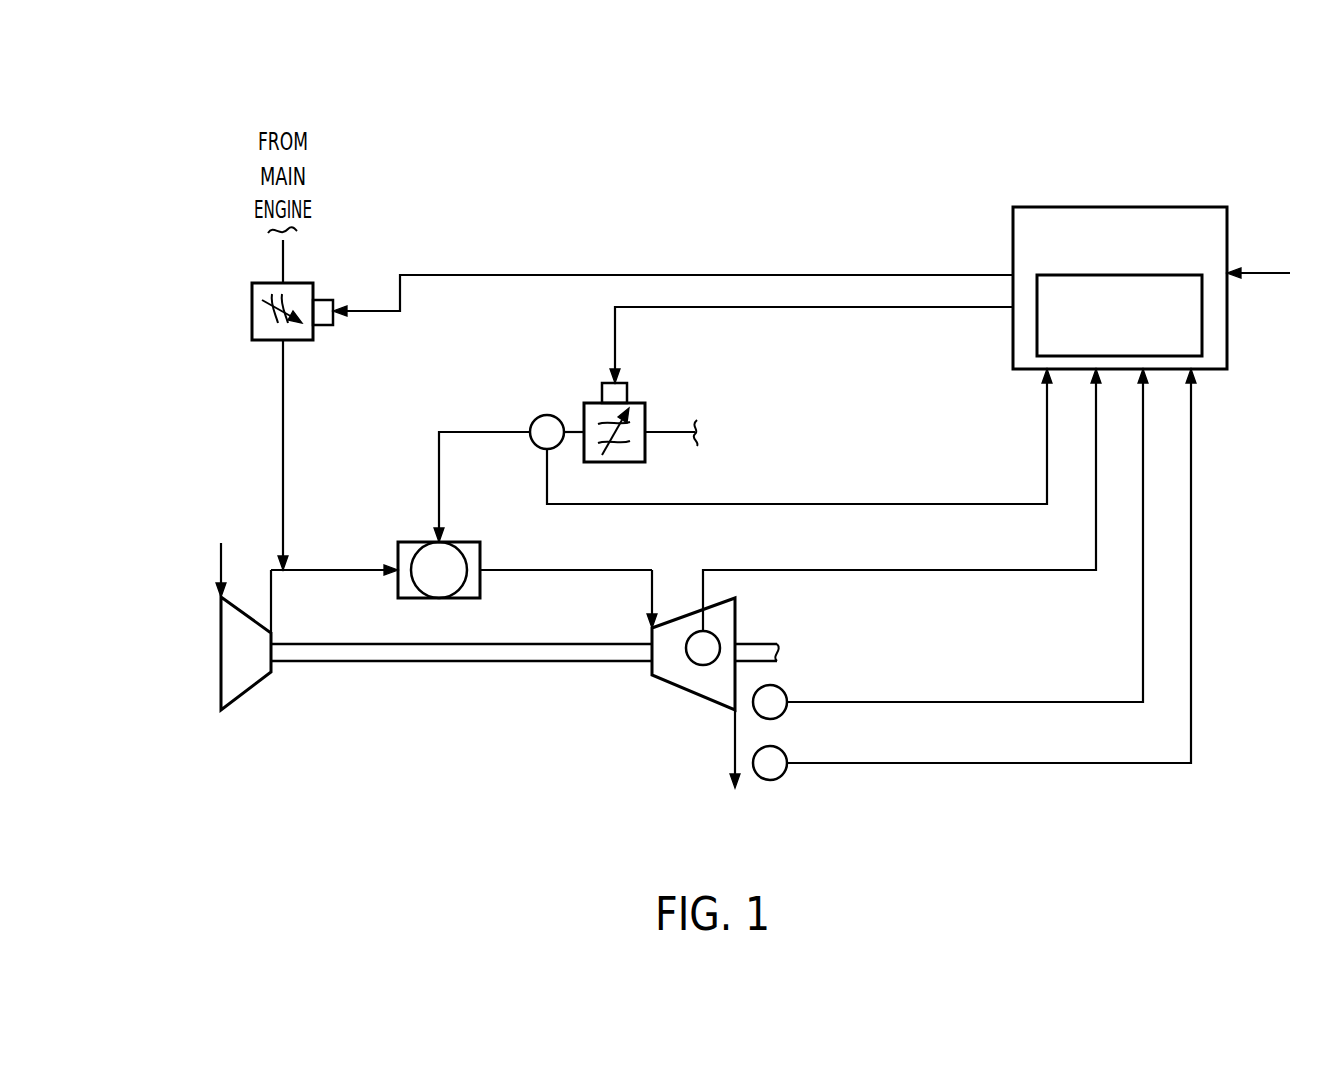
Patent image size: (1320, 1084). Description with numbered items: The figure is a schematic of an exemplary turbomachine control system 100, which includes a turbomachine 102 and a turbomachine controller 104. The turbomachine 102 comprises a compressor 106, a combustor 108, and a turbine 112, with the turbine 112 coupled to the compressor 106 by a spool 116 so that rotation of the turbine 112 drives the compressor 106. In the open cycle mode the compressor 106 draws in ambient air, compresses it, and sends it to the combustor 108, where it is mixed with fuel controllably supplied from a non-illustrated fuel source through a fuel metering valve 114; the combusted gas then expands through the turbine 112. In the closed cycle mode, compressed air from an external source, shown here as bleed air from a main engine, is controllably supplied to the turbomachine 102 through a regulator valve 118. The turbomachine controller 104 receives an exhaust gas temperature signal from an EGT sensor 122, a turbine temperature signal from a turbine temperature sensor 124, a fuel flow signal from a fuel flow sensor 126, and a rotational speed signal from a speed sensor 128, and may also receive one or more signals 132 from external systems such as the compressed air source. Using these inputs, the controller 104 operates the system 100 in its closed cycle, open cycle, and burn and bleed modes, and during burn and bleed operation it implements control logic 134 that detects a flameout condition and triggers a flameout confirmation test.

The turbomachine control system 100 is at (890, 119).
The turbomachine 102 is at (169, 545).
The turbomachine controller 104 is at (1128, 206).
The compressor 106 is at (252, 692).
The combustor 108 is at (404, 541).
The turbine 112 is at (737, 624).
The fuel metering valve 114 is at (660, 384).
The spool 116 is at (551, 663).
The regulator valve 118 is at (252, 311).
The EGT sensor 122 is at (783, 774).
The turbine temperature sensor 124 is at (703, 666).
The fuel flow sensor 126 is at (535, 420).
The speed sensor 128 is at (782, 690).
The signals 132 is at (1262, 268).
The control logic 134 is at (1202, 318).